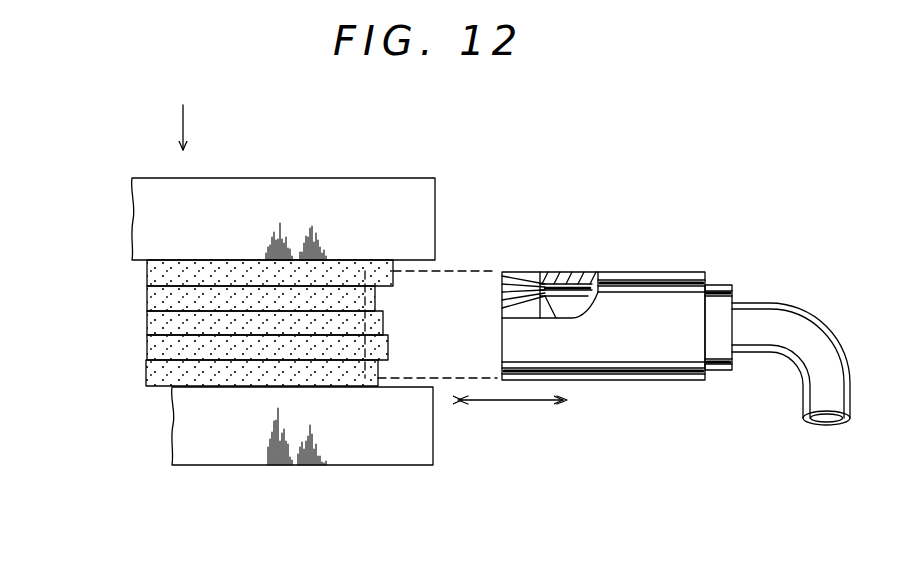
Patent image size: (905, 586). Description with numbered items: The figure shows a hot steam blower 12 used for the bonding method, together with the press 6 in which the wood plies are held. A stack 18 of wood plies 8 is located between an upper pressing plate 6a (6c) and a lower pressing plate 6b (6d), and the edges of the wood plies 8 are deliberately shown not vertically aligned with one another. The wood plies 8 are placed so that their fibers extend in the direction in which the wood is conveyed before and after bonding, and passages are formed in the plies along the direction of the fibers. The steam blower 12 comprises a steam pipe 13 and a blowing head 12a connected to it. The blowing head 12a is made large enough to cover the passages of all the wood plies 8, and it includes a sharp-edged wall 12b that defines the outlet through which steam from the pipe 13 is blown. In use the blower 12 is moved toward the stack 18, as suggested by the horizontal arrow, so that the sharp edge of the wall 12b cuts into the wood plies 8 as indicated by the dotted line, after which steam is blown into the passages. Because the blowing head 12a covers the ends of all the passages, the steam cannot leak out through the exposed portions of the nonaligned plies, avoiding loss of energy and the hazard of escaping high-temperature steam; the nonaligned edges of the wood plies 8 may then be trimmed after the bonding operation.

The press 6 is at (283, 343).
The upper pressing plate 6a is at (305, 210).
The lower pressing plate 6b is at (233, 452).
The upper pressing plate 6c is at (283, 192).
The lower pressing plate 6d is at (302, 460).
The wood plies 8 is at (147, 271).
The stack of wood plies 18 is at (225, 356).
The hot steam blower 12 is at (588, 315).
The blowing head 12a is at (503, 296).
The sharp-edged wall 12b is at (547, 312).
The steam pipe 13 is at (770, 305).